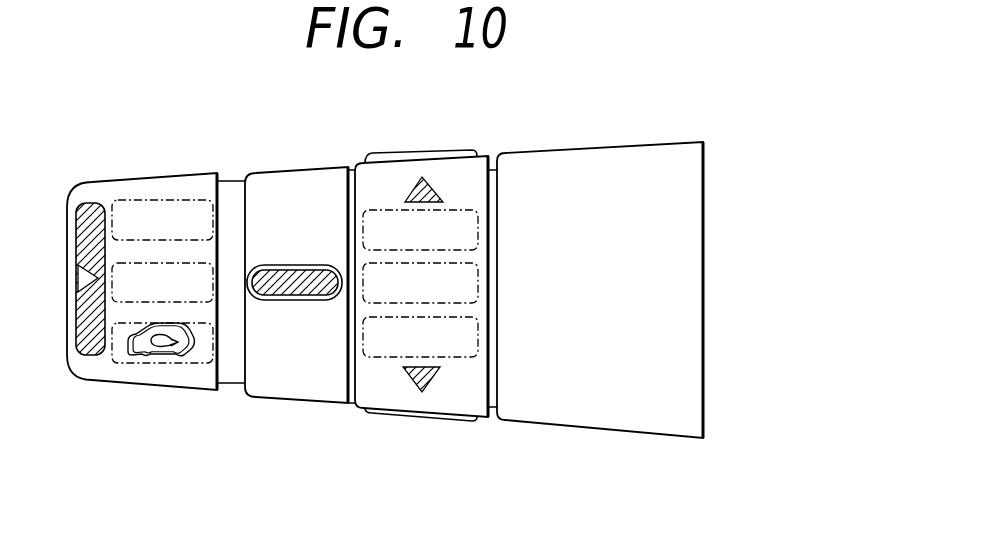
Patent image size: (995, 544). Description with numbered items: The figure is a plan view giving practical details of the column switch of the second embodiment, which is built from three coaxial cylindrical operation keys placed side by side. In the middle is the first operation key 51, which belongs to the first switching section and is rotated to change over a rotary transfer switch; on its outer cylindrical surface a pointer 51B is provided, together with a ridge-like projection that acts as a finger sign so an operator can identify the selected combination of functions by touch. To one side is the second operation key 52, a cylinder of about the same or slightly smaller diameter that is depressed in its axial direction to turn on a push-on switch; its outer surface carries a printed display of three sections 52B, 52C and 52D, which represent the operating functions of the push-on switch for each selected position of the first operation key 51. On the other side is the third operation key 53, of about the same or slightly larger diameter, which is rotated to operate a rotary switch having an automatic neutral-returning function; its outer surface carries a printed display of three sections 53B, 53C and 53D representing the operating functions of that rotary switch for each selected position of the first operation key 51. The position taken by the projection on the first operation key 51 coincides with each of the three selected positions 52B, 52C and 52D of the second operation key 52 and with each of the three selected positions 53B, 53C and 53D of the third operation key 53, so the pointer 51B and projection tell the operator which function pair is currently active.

The second operation key 52 is at (198, 382).
The first section of printed display on second operation key 52B is at (131, 201).
The second section of printed display on second operation key 52C is at (127, 300).
The third section of printed display on second operation key 52D is at (148, 364).
The first operation key 51 is at (276, 384).
The pointer 51B is at (285, 268).
The third operation key 53 is at (378, 390).
The first section of printed display on third operation key 53B is at (373, 212).
The second section of printed display on third operation key 53C is at (478, 278).
The third section of printed display on third operation key 53D is at (470, 358).